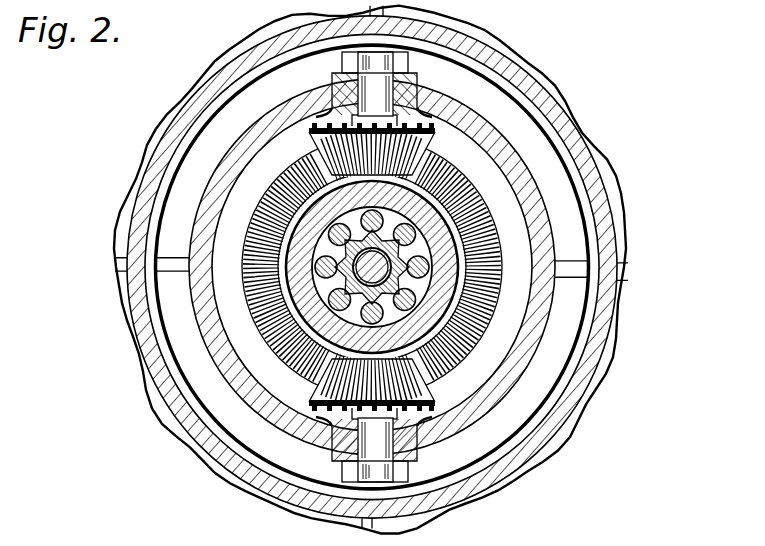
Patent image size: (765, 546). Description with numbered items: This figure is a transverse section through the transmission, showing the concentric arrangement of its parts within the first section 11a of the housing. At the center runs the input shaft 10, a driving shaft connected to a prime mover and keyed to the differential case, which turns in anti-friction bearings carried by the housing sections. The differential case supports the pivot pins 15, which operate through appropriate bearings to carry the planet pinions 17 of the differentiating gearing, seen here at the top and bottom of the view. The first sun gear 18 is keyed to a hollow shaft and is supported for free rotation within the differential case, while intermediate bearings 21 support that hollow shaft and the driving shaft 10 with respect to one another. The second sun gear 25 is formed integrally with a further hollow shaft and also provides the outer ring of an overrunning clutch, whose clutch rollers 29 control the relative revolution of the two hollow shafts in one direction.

The input shaft 10 is at (252, 271).
The first section 11a is at (470, 62).
The pivot pins 15 is at (385, 93).
The planet pinions 17 is at (428, 147).
The first sun gear 18 is at (503, 148).
The intermediate bearings 21 is at (482, 229).
The second sun gear 25 is at (432, 243).
The clutch rollers 29 is at (478, 330).